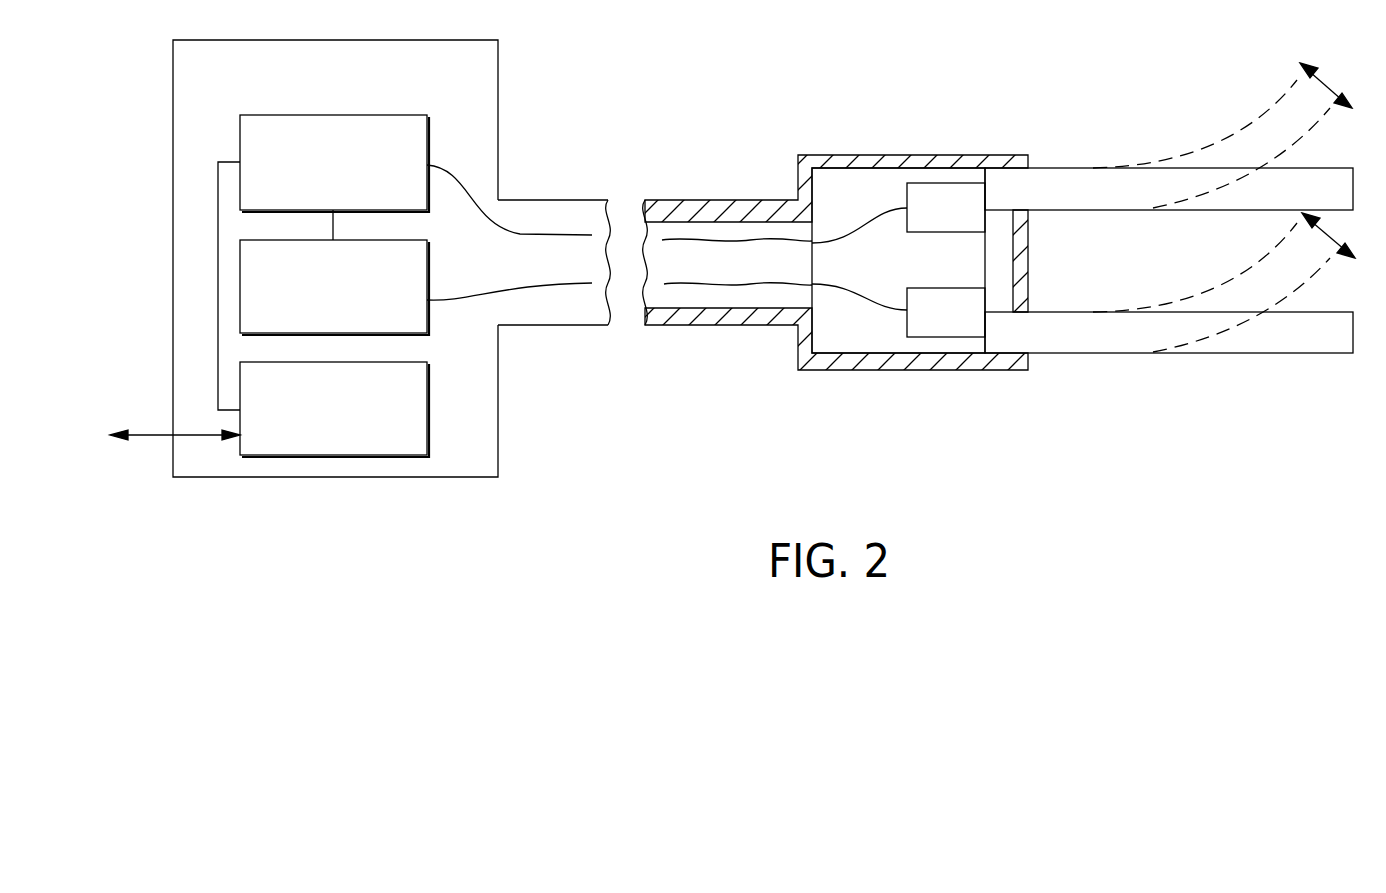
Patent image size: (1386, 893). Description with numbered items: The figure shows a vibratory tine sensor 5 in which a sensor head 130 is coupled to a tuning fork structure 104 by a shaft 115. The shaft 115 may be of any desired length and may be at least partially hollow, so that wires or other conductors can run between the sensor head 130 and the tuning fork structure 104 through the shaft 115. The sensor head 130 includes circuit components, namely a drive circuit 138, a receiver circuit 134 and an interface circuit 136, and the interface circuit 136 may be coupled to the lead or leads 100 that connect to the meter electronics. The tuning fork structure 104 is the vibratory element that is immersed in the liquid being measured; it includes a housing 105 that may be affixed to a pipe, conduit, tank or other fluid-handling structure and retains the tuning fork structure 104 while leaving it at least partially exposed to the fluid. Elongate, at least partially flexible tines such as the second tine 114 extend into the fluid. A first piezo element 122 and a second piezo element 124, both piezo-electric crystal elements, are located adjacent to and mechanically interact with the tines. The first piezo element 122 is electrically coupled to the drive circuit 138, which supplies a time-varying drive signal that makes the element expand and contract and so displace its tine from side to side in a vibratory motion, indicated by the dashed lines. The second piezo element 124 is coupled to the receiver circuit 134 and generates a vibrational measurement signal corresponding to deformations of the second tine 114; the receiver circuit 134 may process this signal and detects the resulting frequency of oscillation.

The vibratory tine sensor 5 is at (405, 513).
The leads 100 is at (148, 435).
The tuning fork structure 104 is at (1180, 400).
The housing 105 is at (858, 155).
The second tine 114 is at (1068, 168).
The shaft 115 is at (549, 200).
The first piezo element 122 is at (938, 338).
The second piezo element 124 is at (935, 183).
The sensor head 130 is at (335, 258).
The receiver circuit 134 is at (416, 177).
The interface circuit 136 is at (323, 309).
The drive circuit 138 is at (416, 287).